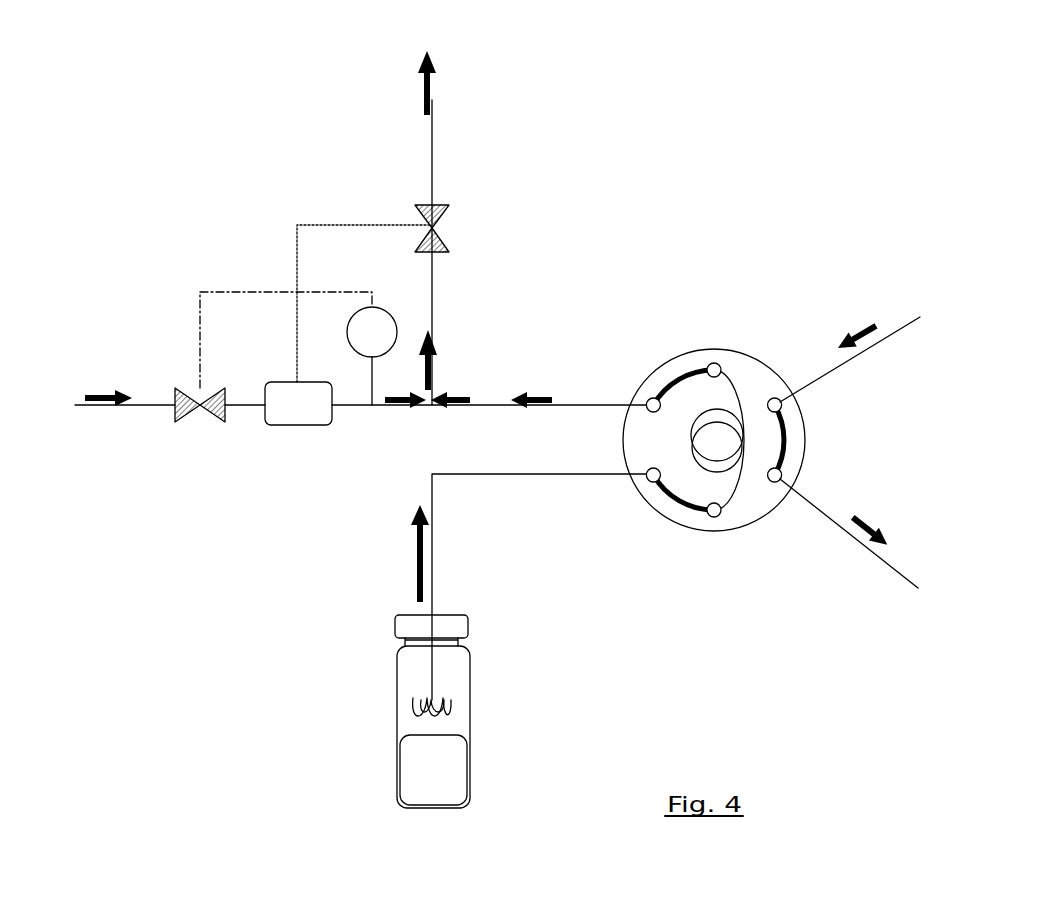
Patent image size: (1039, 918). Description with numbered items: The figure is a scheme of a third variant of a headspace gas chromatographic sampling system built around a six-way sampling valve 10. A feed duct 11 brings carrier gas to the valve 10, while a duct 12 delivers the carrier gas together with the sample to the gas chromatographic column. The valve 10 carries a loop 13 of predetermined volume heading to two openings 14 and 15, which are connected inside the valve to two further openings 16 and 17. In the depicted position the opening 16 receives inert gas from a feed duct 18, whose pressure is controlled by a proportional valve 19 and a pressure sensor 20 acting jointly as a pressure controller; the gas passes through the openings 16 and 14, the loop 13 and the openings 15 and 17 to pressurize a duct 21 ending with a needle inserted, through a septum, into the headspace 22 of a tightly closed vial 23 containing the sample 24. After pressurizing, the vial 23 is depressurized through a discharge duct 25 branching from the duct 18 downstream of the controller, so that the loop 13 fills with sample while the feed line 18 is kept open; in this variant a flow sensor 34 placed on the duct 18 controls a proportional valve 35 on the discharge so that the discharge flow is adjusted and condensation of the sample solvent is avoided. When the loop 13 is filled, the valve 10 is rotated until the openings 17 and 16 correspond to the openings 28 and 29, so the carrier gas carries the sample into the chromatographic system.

The sampling valve 10 is at (773, 522).
The feed duct 11 is at (877, 345).
The duct 12 is at (903, 575).
The loop 13 is at (692, 437).
The opening 14 is at (714, 363).
The opening 15 is at (714, 517).
The opening 16 is at (652, 398).
The opening 17 is at (652, 482).
The feed duct 18 is at (352, 405).
The proportional valve 19 is at (190, 420).
The pressure sensor 20 is at (396, 314).
The duct 21 is at (510, 475).
The headspace 22 is at (415, 685).
The vial 23 is at (470, 770).
The sample 24 is at (445, 784).
The discharge duct 25 is at (434, 333).
The opening 28 is at (773, 398).
The opening 29 is at (781, 474).
The flow sensor 34 is at (290, 410).
The proportional valve 35 is at (432, 228).